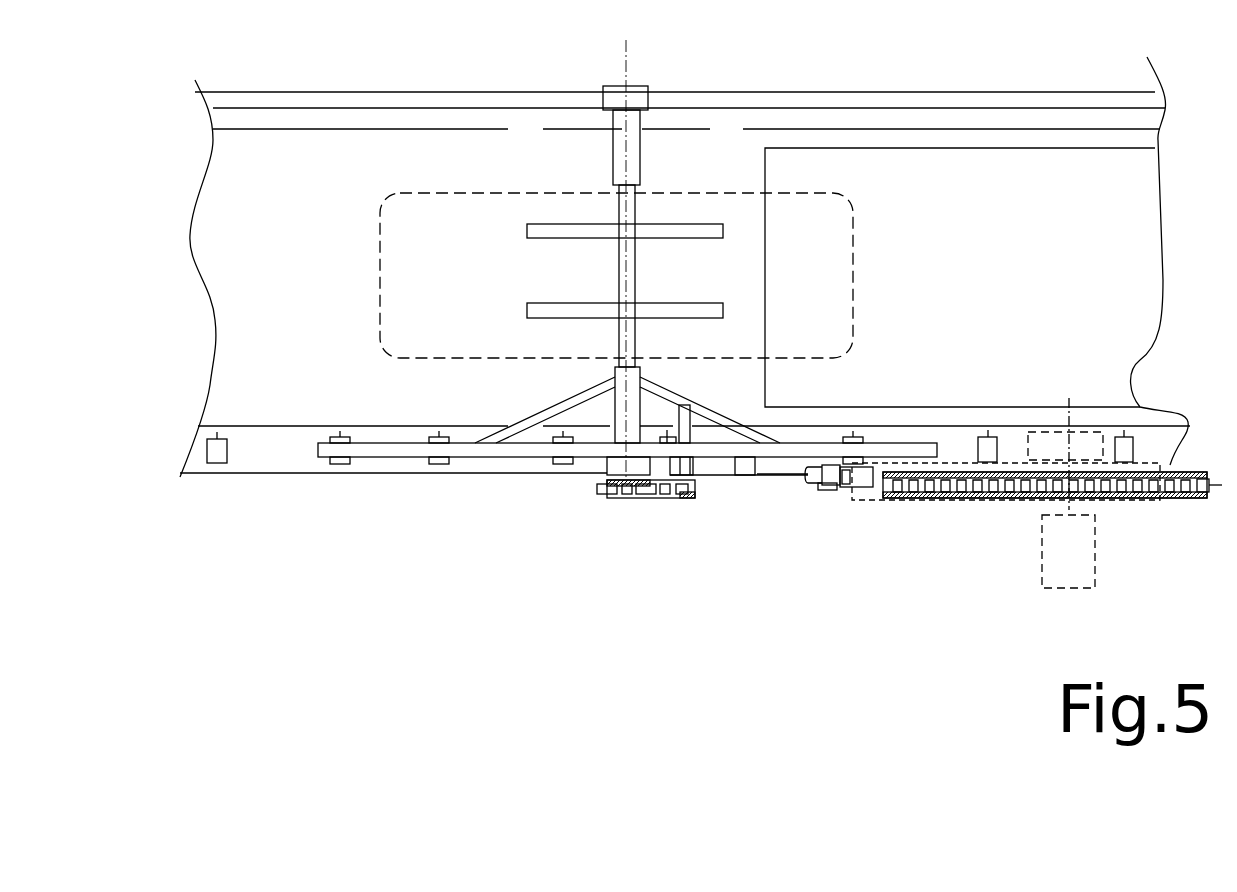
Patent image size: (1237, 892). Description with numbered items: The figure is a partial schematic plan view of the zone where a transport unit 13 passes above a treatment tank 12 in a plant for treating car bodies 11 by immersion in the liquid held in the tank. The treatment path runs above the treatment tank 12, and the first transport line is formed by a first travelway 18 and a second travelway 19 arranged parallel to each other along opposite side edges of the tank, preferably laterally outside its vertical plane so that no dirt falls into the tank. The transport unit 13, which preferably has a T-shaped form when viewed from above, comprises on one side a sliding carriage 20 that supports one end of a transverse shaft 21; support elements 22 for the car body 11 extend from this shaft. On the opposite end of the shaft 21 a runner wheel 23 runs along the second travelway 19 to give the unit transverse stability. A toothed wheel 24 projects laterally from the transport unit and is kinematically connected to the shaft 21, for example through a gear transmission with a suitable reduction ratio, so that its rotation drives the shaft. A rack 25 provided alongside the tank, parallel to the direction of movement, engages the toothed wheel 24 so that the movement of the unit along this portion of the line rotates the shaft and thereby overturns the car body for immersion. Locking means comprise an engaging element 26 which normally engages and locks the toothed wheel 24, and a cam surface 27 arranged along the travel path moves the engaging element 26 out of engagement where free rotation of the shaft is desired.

The car body 11 is at (380, 295).
The treatment tank 12 is at (1130, 168).
The transport unit 13 is at (653, 168).
The first travelway 18 is at (268, 457).
The second travelway 19 is at (1008, 92).
The sliding carriage 20 is at (460, 450).
The transverse shaft 21 is at (615, 276).
The support elements 22 is at (697, 221).
The runner wheel 23 is at (640, 88).
The toothed wheel 24 is at (597, 488).
The rack 25 is at (990, 500).
The engaging element 26 is at (675, 500).
The cam surface 27 is at (902, 498).